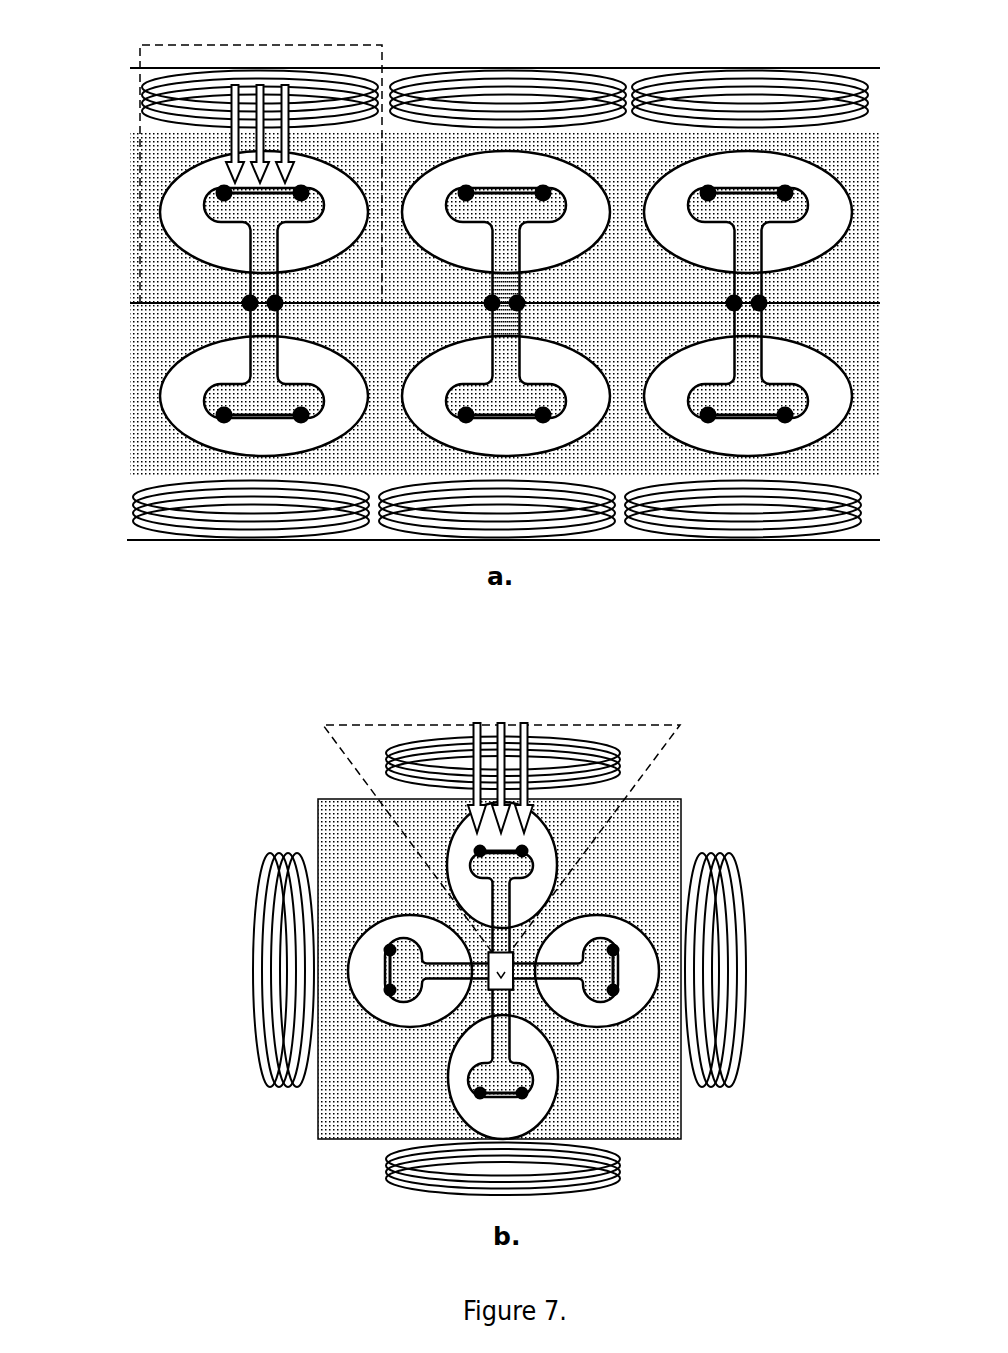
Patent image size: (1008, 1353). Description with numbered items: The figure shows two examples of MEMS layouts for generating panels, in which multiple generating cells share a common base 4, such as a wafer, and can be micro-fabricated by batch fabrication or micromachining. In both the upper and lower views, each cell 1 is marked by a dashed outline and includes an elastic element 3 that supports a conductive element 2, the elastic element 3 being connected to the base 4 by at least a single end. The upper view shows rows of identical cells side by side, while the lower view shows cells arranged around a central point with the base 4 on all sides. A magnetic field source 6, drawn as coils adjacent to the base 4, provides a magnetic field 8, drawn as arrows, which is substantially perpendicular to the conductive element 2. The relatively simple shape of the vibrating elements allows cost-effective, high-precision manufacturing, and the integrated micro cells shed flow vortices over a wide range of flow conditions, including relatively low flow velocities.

The cell 1 is at (140, 48).
The conductive element 2 is at (225, 190).
The elastic element 3 is at (205, 207).
The base 4 is at (163, 282).
The magnetic field source 6 is at (140, 103).
The magnetic field 8 is at (236, 92).